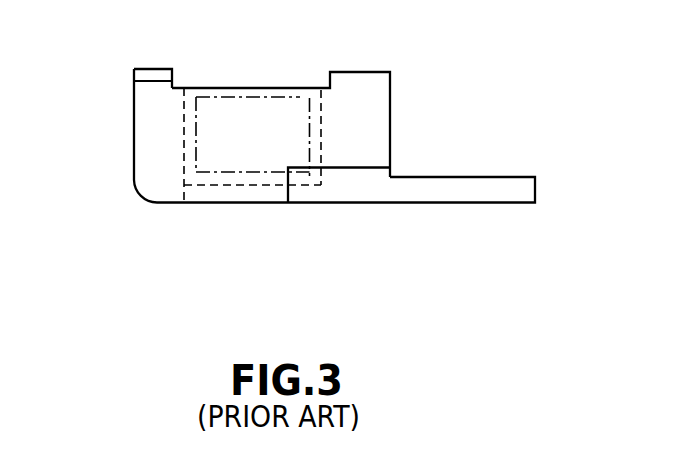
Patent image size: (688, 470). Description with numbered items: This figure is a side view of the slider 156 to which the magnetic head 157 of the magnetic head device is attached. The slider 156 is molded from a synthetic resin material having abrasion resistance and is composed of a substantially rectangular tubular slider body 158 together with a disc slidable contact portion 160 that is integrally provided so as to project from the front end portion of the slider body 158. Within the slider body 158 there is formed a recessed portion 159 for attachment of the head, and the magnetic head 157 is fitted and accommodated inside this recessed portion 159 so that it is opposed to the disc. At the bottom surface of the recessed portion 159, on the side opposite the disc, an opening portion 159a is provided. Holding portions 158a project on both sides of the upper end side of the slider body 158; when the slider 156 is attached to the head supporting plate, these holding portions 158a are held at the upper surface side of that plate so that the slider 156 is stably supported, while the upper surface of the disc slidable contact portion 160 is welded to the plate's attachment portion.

The slider 156 is at (396, 71).
The magnetic head 157 is at (197, 143).
The slider body 158 is at (134, 136).
The holding portions 158a is at (148, 73).
The recessed portion for attachment of head 159 is at (321, 112).
The opening portion 159a is at (218, 196).
The disc slidable contact portion 160 is at (452, 193).